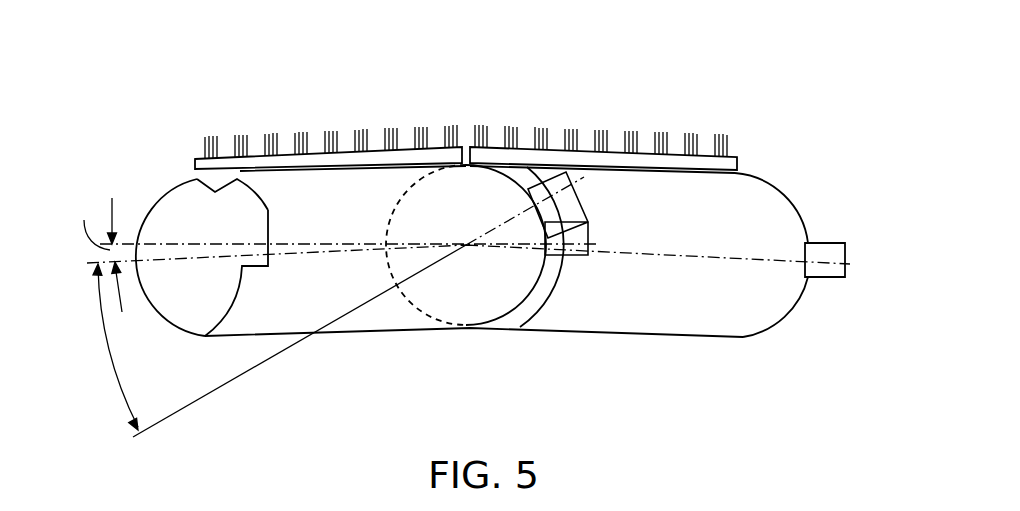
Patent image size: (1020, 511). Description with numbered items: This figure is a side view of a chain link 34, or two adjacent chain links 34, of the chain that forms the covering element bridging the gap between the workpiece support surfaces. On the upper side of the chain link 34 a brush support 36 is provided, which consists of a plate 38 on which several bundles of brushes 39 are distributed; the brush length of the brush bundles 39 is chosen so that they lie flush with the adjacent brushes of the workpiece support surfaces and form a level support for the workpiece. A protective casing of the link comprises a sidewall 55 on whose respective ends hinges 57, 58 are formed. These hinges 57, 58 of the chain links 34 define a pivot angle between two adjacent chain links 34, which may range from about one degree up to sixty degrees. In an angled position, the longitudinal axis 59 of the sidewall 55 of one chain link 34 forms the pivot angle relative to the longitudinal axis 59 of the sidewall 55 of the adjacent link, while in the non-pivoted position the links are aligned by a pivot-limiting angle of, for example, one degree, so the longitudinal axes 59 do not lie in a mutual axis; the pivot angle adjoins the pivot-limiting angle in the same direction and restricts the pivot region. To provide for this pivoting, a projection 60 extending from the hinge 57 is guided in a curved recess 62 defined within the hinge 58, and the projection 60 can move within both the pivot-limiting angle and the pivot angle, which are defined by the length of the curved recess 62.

The chain link 34 is at (373, 343).
The brush support 36 is at (742, 92).
The plate 38 is at (195, 164).
The bundles of brushes 39 is at (474, 127).
The sidewall 55 is at (390, 313).
The hinge 57 is at (514, 282).
The hinge 58 is at (584, 285).
The longitudinal axis 59 is at (168, 247).
The projection 60 is at (828, 270).
The curved recess 62 is at (260, 211).